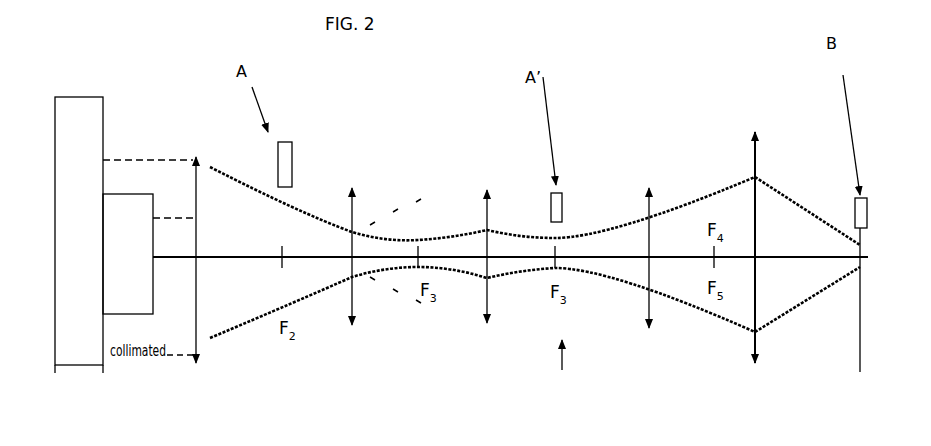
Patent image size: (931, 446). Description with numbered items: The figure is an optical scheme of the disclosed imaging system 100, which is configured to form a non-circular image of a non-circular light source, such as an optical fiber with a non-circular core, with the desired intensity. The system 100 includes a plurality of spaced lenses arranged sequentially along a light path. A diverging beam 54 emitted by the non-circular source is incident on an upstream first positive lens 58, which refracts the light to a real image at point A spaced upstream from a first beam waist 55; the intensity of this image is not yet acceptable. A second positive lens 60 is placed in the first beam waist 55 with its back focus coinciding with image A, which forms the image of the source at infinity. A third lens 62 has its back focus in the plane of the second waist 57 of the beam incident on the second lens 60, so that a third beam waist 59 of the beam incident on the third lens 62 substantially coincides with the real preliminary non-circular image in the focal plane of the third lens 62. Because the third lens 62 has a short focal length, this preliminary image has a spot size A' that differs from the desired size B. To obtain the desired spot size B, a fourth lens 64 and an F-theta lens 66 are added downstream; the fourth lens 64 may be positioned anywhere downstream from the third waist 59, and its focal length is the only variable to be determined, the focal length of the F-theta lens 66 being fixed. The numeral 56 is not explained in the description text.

The diverging beam 54 is at (180, 355).
The first beam waist 55 is at (375, 217).
The laser source 56 is at (128, 254).
The second waist 57 is at (427, 238).
The first positive lens 58 is at (194, 279).
The third beam waist 59 is at (560, 230).
The second positive lens 60 is at (349, 269).
The third lens 62 is at (486, 269).
The fourth lens 64 is at (652, 245).
The F-theta lens 66 is at (758, 235).
The imaging system 100 is at (455, 143).